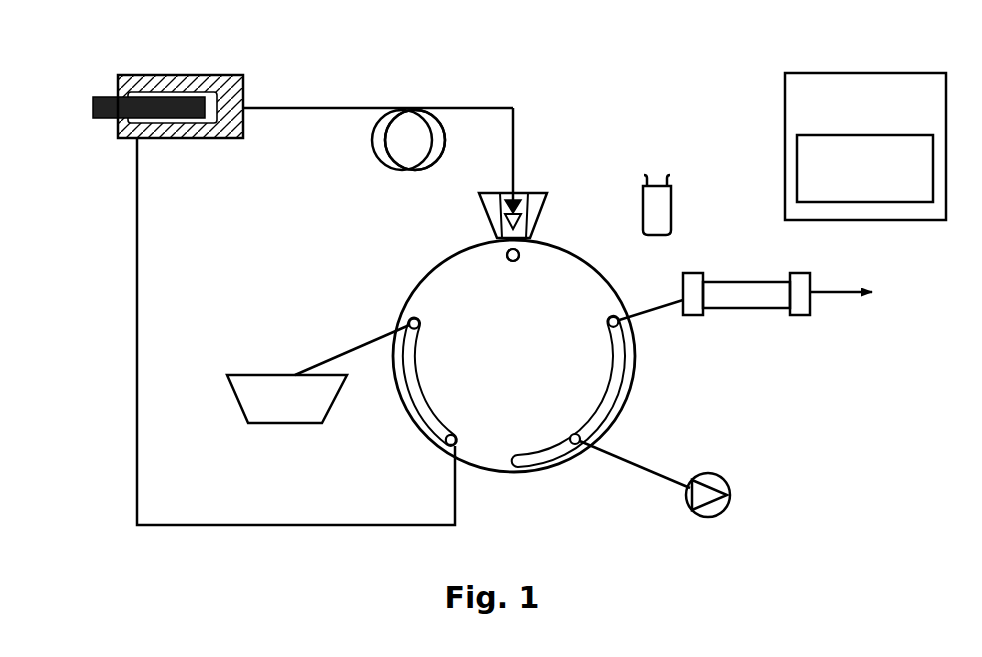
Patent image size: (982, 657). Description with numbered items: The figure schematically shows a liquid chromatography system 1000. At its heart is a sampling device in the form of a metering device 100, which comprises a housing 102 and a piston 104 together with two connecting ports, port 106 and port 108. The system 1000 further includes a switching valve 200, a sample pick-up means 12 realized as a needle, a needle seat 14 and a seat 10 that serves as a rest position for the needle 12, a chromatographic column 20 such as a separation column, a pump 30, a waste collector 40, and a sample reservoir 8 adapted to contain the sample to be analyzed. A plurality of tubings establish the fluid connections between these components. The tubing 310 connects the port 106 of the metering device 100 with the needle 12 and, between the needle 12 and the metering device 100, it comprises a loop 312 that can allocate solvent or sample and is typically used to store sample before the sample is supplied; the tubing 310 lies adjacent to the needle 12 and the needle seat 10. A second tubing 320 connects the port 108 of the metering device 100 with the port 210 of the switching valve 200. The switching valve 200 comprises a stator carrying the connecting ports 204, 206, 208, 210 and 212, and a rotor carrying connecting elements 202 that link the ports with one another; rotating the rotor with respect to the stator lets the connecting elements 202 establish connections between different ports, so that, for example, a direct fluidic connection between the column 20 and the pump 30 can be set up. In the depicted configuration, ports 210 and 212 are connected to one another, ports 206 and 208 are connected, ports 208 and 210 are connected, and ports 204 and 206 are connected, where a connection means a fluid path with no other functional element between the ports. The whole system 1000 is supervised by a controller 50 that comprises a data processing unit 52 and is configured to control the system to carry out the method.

The liquid chromatography system 1000 is at (618, 97).
The metering device 100 is at (129, 67).
The housing 102 is at (101, 126).
The piston 104 is at (220, 72).
The connecting port 106 is at (250, 100).
The connecting port 108 is at (147, 151).
The tubing 310 is at (376, 97).
The loop 312 is at (399, 171).
The tubing 320 is at (150, 314).
The needle seat 10 is at (544, 233).
The sample pick-up means 12 is at (525, 183).
The needle seat 14 is at (502, 248).
The switching valve 200 is at (462, 302).
The connecting elements 202 is at (450, 412).
The connecting port 204 is at (530, 260).
The connecting port 206 is at (599, 306).
The connecting port 208 is at (574, 416).
The connecting port 210 is at (468, 441).
The connecting port 212 is at (421, 306).
The waste collector 40 is at (255, 436).
The chromatographic column 20 is at (732, 326).
The pump 30 is at (719, 470).
The sample reservoir 8 is at (682, 212).
The controller 50 is at (784, 96).
The data processing unit 52 is at (811, 128).